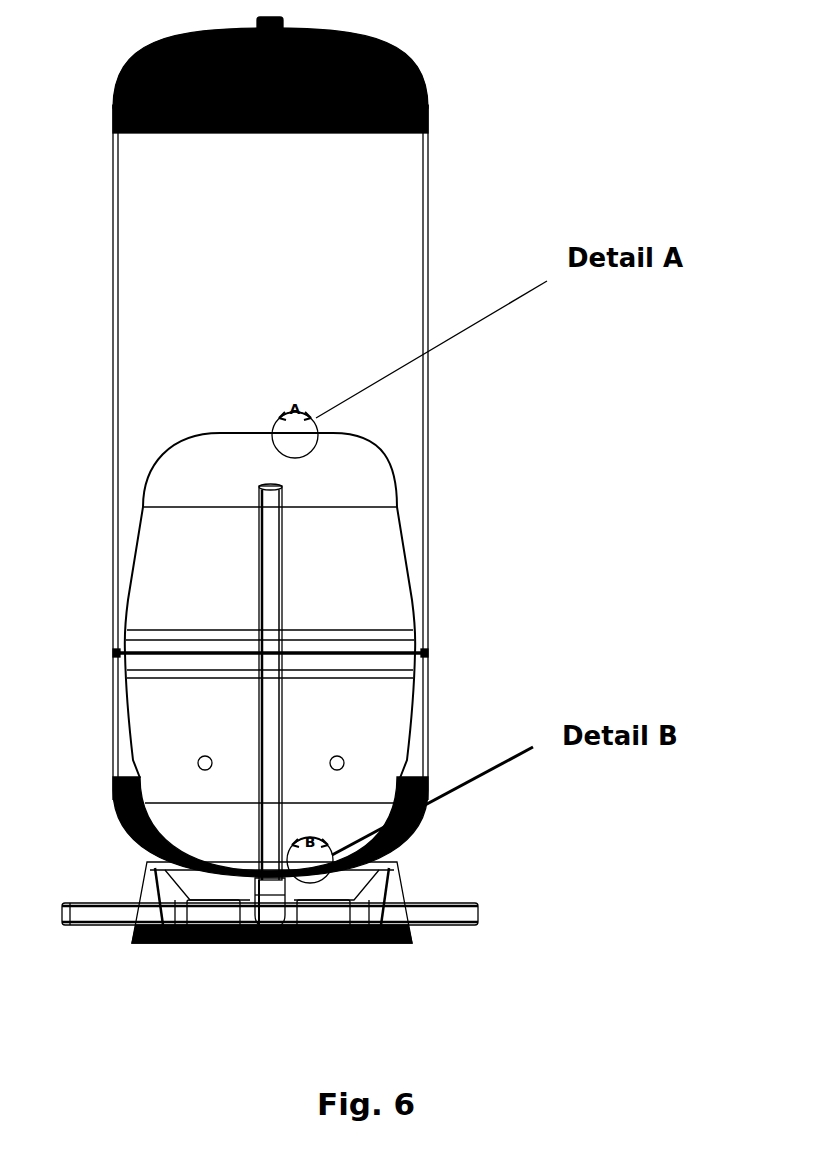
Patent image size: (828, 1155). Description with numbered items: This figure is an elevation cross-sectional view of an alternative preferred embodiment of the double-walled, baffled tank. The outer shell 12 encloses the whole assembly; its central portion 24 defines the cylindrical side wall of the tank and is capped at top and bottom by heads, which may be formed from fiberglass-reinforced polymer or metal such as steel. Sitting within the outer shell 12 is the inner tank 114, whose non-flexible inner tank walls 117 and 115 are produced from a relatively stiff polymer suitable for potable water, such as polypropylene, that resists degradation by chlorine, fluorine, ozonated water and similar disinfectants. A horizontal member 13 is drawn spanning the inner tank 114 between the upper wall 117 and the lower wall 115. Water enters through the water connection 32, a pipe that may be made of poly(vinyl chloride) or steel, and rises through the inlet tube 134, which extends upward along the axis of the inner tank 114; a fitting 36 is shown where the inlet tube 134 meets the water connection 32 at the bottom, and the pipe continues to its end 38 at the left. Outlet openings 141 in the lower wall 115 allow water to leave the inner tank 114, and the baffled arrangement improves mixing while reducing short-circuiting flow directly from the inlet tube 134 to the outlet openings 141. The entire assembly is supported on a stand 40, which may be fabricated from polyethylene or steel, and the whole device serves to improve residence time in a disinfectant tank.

The outer shell 12 is at (427, 180).
The central portion 24 is at (428, 278).
The inner tank 114 is at (385, 463).
The inlet tube 134 is at (283, 528).
The inner tank wall 117 is at (406, 567).
The support plate 13 is at (420, 653).
The outlet openings 141 is at (205, 755).
The inner tank wall 115 is at (408, 714).
The bottom fitting 36 is at (252, 880).
The water connection 32 is at (468, 900).
The pipe end 38 is at (85, 925).
The stand 40 is at (157, 943).